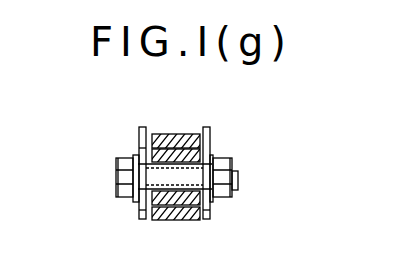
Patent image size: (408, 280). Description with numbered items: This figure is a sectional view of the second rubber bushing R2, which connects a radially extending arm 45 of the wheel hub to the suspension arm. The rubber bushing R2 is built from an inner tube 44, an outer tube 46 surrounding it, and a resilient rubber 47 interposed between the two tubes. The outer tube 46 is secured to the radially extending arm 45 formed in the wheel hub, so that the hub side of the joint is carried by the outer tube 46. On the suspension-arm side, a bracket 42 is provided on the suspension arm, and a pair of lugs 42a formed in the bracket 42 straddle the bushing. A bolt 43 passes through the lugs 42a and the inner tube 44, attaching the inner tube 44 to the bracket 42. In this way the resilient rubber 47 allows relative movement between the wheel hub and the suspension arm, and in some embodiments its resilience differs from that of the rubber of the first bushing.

The bracket 42 is at (136, 210).
The lugs 42a is at (142, 220).
The bolt 43 is at (174, 172).
The inner tube 44 is at (188, 222).
The radially extending arm 45 is at (193, 134).
The outer tube 46 is at (172, 222).
The resilient rubber 47 is at (163, 142).
The rubber bushing R2 is at (143, 150).